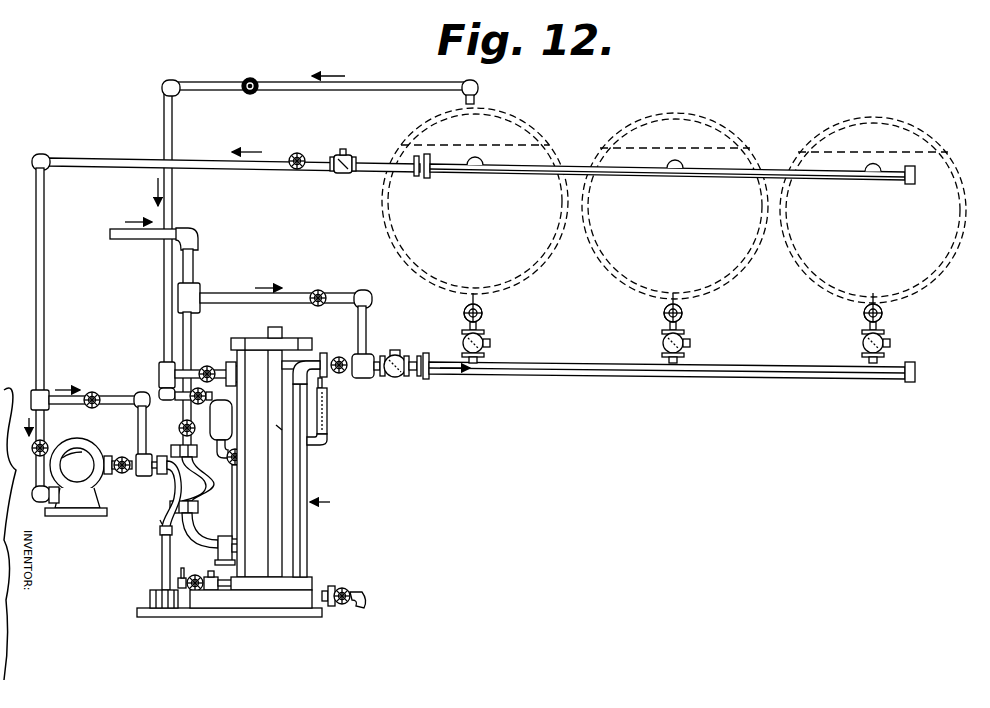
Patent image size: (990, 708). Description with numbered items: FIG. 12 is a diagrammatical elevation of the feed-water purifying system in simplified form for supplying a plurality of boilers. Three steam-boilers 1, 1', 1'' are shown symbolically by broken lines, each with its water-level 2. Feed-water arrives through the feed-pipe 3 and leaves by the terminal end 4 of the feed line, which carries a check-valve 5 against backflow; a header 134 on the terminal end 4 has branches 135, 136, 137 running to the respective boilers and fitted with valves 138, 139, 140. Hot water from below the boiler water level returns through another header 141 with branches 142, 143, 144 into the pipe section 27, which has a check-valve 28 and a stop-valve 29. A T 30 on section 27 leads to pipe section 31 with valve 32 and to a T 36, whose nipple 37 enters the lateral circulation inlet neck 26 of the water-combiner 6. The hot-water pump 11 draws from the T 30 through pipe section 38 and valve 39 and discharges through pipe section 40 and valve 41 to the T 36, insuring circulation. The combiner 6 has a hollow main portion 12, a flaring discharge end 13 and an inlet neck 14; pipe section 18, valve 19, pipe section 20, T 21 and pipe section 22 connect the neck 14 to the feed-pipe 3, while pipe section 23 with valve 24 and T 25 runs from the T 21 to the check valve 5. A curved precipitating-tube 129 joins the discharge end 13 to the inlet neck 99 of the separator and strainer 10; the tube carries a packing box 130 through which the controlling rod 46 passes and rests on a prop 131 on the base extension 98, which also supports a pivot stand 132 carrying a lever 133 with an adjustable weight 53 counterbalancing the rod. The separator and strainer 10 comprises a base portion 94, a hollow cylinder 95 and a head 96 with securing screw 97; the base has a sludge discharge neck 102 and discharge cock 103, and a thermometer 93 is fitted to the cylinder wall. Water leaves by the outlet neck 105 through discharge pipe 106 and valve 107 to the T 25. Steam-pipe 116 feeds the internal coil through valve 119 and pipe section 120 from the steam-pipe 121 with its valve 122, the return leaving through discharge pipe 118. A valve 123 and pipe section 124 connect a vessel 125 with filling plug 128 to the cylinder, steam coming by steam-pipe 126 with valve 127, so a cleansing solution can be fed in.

The steam-boiler 1 is at (475, 190).
The steam-boiler 1' is at (675, 191).
The steam-boiler 1'' is at (873, 192).
The water-level 2 is at (412, 145).
The feed-pipe 3 is at (118, 229).
The terminal end of the feed line 4 is at (425, 353).
The check-valve 5 is at (396, 377).
The water-combiner 6 is at (170, 494).
The separator and strainer 10 is at (331, 500).
The pump 11 is at (88, 440).
The hollow main portion 12 is at (198, 484).
The discharge end 13 is at (196, 514).
The inlet neck 14 is at (215, 530).
The pipe section 18 is at (171, 450).
The valve 19 is at (179, 429).
The pipe section 20 is at (191, 332).
The T 21 is at (198, 295).
The pipe section 22 is at (194, 258).
The pipe section 23 is at (302, 293).
The valve 24 is at (320, 290).
The T 25 is at (366, 378).
The circulation inlet neck 26 is at (160, 520).
The pipe section 27 is at (367, 162).
The check-valve 28 is at (343, 174).
The stop-valve 29 is at (297, 153).
The T 30 is at (48, 392).
The pipe section 31 is at (95, 392).
The valve 32 is at (108, 404).
The T 36 is at (142, 454).
The nipple 37 is at (158, 476).
The pipe section 38 is at (52, 504).
The valve 39 is at (46, 440).
The pipe section 40 is at (120, 458).
The valve 41 is at (108, 476).
The controlling rod 46 is at (178, 583).
The weight 53 is at (220, 590).
The thermometer 93 is at (328, 430).
The base portion 94 is at (280, 617).
The hollow cylinder 95 is at (307, 528).
The head 96 is at (290, 338).
The securing screw 97 is at (275, 327).
The horizontal extension 98 is at (150, 598).
The inlet neck 99 is at (243, 548).
The sludge discharge neck 102 is at (340, 589).
The discharge cock 103 is at (364, 602).
The outlet neck 105 is at (305, 360).
The discharge pipe 106 is at (339, 357).
The valve 107 is at (322, 372).
The steam-pipe 116 is at (241, 388).
The discharge pipe 118 is at (232, 360).
The valve 119 is at (207, 366).
The pipe section 120 is at (170, 366).
The steam-pipe 121 is at (378, 82).
The valve 122 is at (250, 78).
The valve 123 is at (239, 478).
The pipe section 124 is at (242, 453).
The vessel 125 is at (282, 430).
The steam-pipe 126 is at (160, 385).
The valve 127 is at (214, 402).
The filling plug 128 is at (233, 412).
The curved precipitating-tube 129 is at (232, 540).
The packing box 130 is at (160, 532).
The prop 131 is at (162, 566).
The pivot stand 132 is at (195, 592).
The lever 133 is at (209, 577).
The header 134 is at (620, 379).
The branch 135 is at (485, 333).
The branch 136 is at (685, 335).
The branch 137 is at (885, 336).
The valve 138 is at (464, 312).
The valve 139 is at (664, 314).
The valve 140 is at (864, 314).
The header 141 is at (770, 166).
The branch 142 is at (482, 160).
The branch 143 is at (676, 162).
The branch 144 is at (874, 165).